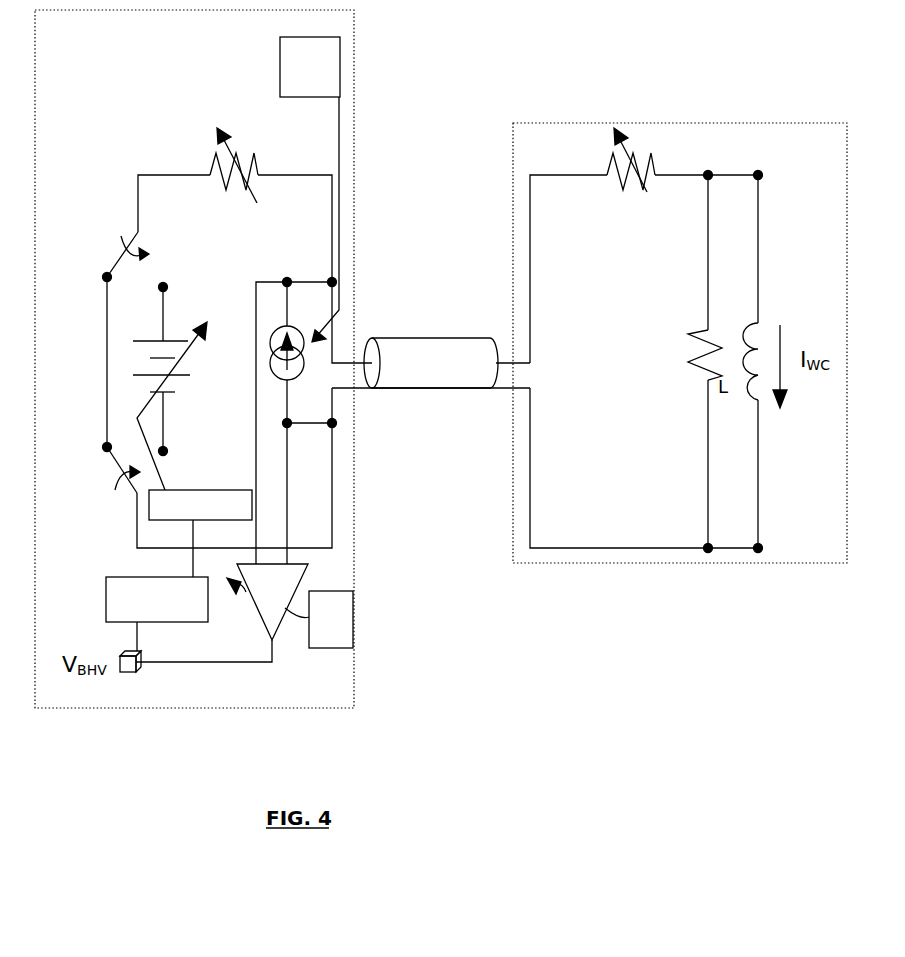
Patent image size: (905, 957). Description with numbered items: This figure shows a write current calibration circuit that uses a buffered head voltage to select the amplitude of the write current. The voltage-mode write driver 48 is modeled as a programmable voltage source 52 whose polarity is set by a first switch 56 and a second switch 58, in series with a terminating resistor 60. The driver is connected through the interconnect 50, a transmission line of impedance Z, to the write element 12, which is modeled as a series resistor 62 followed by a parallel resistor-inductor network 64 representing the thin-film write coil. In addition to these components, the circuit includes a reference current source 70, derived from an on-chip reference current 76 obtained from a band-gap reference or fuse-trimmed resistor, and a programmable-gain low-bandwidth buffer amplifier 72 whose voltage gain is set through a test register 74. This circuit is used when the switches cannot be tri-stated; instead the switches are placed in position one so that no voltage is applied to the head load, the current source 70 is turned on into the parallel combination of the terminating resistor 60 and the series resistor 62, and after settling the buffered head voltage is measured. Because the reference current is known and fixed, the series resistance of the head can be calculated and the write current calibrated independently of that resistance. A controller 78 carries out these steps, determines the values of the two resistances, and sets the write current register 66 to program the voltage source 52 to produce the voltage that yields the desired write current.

The write element 12 is at (513, 238).
The voltage-mode write driver 48 is at (353, 226).
The interconnect 50 is at (440, 300).
The programmable voltage source 52 is at (155, 337).
The switch SW1 56 is at (108, 198).
The switch SW2 58 is at (92, 522).
The terminating resistor RW 60 is at (282, 169).
The series resistor RC 62 is at (585, 167).
The parallel R-L network 64 is at (680, 307).
The IWC Register 66 is at (193, 490).
The current source IWB 70 is at (294, 373).
The buffer amplifier 72 is at (278, 622).
The test register 74 is at (338, 648).
The reference current 76 is at (306, 85).
The controller 78 is at (105, 578).